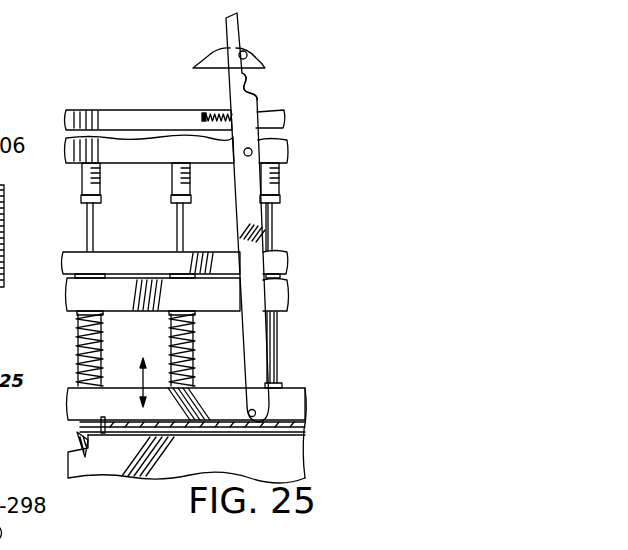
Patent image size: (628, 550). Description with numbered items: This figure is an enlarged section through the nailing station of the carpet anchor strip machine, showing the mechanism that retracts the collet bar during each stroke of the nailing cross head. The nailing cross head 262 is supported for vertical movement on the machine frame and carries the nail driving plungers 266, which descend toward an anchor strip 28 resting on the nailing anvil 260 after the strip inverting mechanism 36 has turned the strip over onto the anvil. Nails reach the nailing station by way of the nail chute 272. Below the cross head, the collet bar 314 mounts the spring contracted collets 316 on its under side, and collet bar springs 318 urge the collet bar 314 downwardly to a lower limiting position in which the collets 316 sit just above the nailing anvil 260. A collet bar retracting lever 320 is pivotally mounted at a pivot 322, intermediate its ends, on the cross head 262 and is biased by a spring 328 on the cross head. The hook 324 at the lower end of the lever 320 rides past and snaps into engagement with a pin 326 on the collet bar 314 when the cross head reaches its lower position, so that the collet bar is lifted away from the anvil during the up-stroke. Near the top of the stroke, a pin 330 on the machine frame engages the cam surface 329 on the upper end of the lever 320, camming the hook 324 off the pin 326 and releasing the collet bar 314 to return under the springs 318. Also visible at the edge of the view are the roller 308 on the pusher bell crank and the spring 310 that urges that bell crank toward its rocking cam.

The collet bar retracting lever 320 is at (263, 232).
The collet bar pin 326 is at (249, 413).
The machine frame pin 330 is at (248, 56).
The cam surface 329 is at (258, 80).
The spring 328 is at (216, 112).
The nailing cross head 262 is at (177, 150).
The lever pivot 322 is at (253, 152).
The nail driving plunger 266 is at (177, 228).
The nail chute 272 is at (83, 288).
The collet bar spring 318 is at (108, 337).
The collet bar 314 is at (186, 410).
The anchor strip 28 is at (306, 428).
The strip inverting mechanism 36 is at (187, 435).
The collet 316 is at (79, 450).
The nailing anvil 260 is at (80, 477).
The hook 324 is at (268, 412).
The roller 308 is at (6, 176).
The spring 310 is at (18, 406).